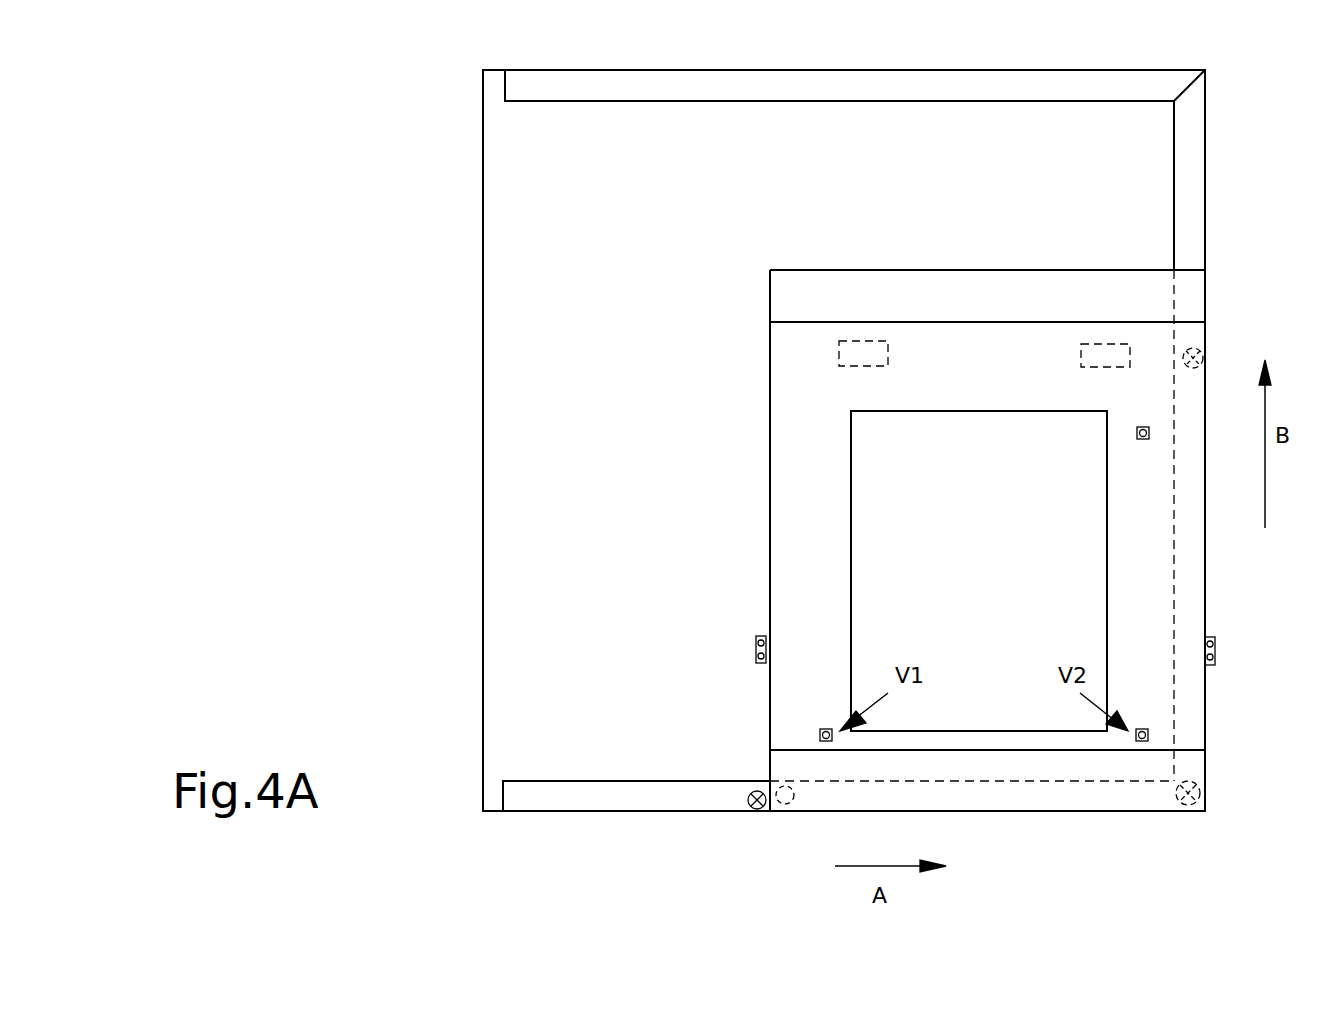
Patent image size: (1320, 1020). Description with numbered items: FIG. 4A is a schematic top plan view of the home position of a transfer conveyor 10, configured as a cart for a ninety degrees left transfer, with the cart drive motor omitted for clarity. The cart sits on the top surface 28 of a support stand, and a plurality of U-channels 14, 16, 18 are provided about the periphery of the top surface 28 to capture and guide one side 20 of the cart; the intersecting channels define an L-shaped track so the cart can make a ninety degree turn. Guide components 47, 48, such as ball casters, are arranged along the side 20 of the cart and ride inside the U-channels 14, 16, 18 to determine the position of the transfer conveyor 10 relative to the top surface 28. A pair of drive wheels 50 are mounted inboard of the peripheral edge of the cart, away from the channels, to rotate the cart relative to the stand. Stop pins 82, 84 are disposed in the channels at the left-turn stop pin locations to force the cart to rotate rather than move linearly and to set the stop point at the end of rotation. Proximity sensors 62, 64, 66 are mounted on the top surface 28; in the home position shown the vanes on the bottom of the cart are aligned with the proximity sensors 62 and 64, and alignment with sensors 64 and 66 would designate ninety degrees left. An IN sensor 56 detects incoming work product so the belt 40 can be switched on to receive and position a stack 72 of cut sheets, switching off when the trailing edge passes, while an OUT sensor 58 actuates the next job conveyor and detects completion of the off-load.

The transfer conveyor 10 is at (712, 247).
The U-channel 14 is at (602, 793).
The U-channel 16 is at (1197, 180).
The U-channel 18 is at (1045, 92).
The side of the cart 20 is at (1010, 813).
The top surface 28 is at (640, 398).
The belt 40 is at (792, 465).
The guide component 47 is at (784, 805).
The guide component 48 is at (1185, 800).
The drive wheel 50 is at (878, 356).
The IN sensor 56 is at (1215, 655).
The OUT sensor 58 is at (756, 650).
The proximity sensor 62 is at (826, 728).
The proximity sensor 64 is at (1142, 728).
The proximity sensor 66 is at (1143, 426).
The stack 72 is at (1010, 573).
The stop pin 82 is at (744, 808).
The stop pin 84 is at (1205, 362).